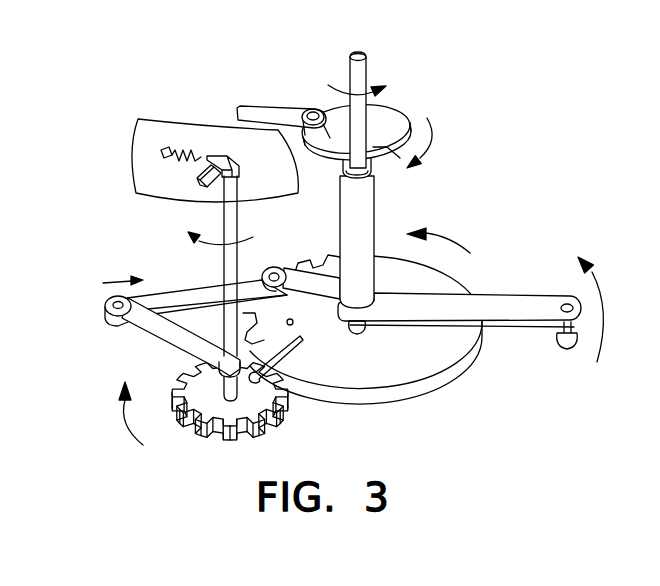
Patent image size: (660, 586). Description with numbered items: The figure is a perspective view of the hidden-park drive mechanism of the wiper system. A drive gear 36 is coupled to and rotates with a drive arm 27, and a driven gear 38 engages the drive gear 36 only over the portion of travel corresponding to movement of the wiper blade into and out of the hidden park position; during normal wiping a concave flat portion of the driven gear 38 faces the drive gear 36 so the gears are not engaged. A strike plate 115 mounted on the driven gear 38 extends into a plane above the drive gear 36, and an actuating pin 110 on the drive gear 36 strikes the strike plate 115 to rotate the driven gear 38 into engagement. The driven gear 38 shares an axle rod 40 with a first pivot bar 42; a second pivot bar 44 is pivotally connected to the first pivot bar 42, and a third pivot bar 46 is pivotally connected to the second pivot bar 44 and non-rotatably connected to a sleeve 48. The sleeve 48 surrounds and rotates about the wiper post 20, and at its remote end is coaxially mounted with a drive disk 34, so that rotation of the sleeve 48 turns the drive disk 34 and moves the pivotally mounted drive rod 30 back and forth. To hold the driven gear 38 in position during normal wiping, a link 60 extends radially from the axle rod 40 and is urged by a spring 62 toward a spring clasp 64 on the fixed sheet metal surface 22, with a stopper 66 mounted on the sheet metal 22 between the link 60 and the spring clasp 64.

The wiper post 20 is at (360, 64).
The sheet metal surface 22 is at (145, 144).
The drive arm 27 is at (517, 305).
The drive rod 30 is at (282, 112).
The drive disk 34 is at (400, 123).
The drive gear 36 is at (396, 392).
The driven gear 38 is at (217, 434).
The axle rod 40 is at (226, 270).
The first pivot bar 42 is at (140, 325).
The second pivot bar 44 is at (160, 302).
The third pivot bar 46 is at (292, 277).
The sleeve 48 is at (360, 240).
The link 60 is at (213, 158).
The spring 62 is at (182, 160).
The spring clasp 64 is at (162, 153).
The stopper 66 is at (203, 184).
The actuating pin 110 is at (294, 323).
The strike plate 115 is at (301, 345).